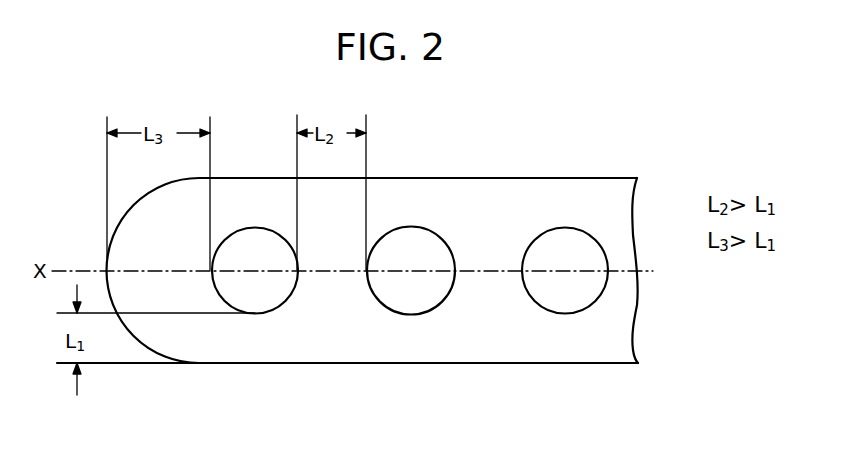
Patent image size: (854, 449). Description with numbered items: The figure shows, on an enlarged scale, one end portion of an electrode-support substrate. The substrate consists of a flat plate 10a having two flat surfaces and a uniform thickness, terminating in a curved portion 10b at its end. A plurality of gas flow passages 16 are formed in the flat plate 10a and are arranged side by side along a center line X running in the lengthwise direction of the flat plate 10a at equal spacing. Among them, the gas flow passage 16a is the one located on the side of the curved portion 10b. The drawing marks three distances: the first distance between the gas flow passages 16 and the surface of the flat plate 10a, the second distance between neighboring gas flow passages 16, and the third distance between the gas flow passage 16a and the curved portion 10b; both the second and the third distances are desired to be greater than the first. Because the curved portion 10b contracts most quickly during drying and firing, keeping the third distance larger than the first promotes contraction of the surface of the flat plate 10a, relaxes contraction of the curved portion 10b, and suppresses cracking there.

The flat plate 10a is at (500, 205).
The curved portion 10b is at (137, 248).
The gas flow passages 16 is at (422, 302).
The gas flow passage located on the side of the curved portion 16a is at (258, 303).